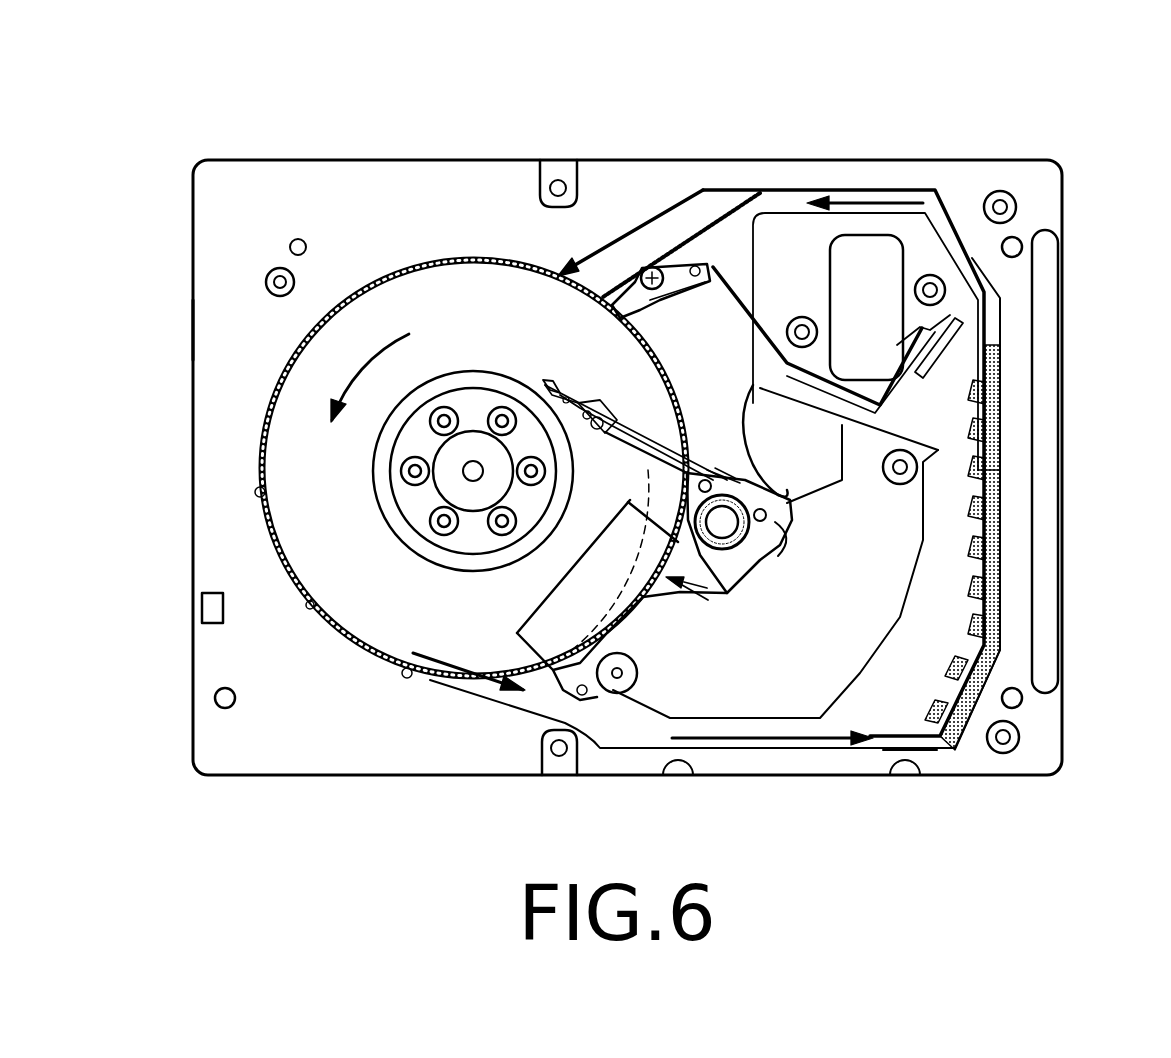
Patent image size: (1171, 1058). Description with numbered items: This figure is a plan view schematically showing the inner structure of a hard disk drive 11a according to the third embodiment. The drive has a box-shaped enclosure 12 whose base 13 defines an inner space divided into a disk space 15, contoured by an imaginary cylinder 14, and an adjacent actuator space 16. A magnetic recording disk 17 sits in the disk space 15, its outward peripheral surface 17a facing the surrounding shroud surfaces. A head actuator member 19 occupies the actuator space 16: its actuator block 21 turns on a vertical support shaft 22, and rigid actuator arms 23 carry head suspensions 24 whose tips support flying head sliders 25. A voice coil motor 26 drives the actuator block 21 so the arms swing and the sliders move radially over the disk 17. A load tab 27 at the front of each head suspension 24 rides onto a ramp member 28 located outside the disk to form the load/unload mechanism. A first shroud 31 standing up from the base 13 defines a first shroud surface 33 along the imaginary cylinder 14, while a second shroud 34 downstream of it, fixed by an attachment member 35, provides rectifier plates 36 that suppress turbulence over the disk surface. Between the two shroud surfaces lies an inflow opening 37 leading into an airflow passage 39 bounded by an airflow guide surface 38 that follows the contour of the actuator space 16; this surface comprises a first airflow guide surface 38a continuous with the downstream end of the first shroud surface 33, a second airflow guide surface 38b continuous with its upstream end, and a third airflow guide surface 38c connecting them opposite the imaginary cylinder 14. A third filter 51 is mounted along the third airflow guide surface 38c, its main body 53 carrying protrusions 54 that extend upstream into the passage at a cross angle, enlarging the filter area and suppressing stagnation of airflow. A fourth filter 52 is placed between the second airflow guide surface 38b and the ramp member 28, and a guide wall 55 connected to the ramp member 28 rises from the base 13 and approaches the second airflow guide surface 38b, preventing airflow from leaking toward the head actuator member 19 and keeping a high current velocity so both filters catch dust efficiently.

The hard disk drive 11a is at (233, 138).
The enclosure 12 is at (421, 137).
The base 13 is at (192, 326).
The imaginary cylinder 14 is at (643, 338).
The disk space 15 is at (422, 329).
The actuator space 16 is at (853, 726).
The magnetic recording disk 17 is at (290, 372).
The outward peripheral surface 17a is at (265, 494).
The head actuator member 19 is at (652, 433).
The actuator block 21 is at (757, 487).
The vertical support shaft 22 is at (747, 537).
The actuator arm 23 is at (655, 433).
The head suspension 24 is at (583, 428).
The flying head slider 25 is at (557, 381).
The voice coil motor 26 is at (778, 745).
The load tab 27 is at (545, 380).
The ramp member 28 is at (613, 323).
The first shroud 31 is at (270, 599).
The first shroud surface 33 is at (308, 609).
The second shroud 34 is at (707, 598).
The attachment member 35 is at (600, 679).
The rectifier plate 36 is at (517, 633).
The inflow opening 37 is at (403, 675).
The airflow guide surface 38 is at (692, 758).
The first airflow guide surface 38a is at (918, 758).
The second airflow guide surface 38b is at (840, 198).
The third airflow guide surface 38c is at (1003, 300).
The airflow passage 39 is at (590, 695).
The third filter 51 is at (1040, 470).
The fourth filter 52 is at (647, 235).
The main body 53 is at (1000, 530).
The protrusion 54 is at (975, 480).
The guide wall 55 is at (753, 313).